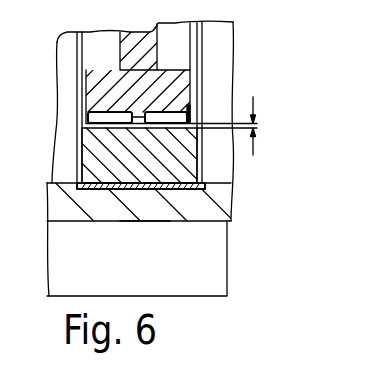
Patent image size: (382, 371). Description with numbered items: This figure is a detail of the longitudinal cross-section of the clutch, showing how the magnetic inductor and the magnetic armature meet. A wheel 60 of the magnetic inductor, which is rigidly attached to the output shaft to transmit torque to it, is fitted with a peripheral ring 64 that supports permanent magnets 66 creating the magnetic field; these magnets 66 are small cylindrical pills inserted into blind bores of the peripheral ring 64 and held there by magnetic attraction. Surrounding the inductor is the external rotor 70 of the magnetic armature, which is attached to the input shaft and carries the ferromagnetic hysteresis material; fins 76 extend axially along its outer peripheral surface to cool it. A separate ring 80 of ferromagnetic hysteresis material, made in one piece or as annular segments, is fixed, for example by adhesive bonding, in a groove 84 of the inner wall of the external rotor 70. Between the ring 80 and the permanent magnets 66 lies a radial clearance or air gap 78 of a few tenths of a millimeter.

The wheel 60 is at (177, 48).
The peripheral ring 64 is at (177, 85).
The permanent magnets 66 is at (153, 115).
The external rotor 70 is at (207, 205).
The fins 76 is at (208, 273).
The radial clearance or air gap 78 is at (256, 126).
The ring of ferromagnetic hysteresis material 80 is at (181, 158).
The groove 84 is at (147, 221).